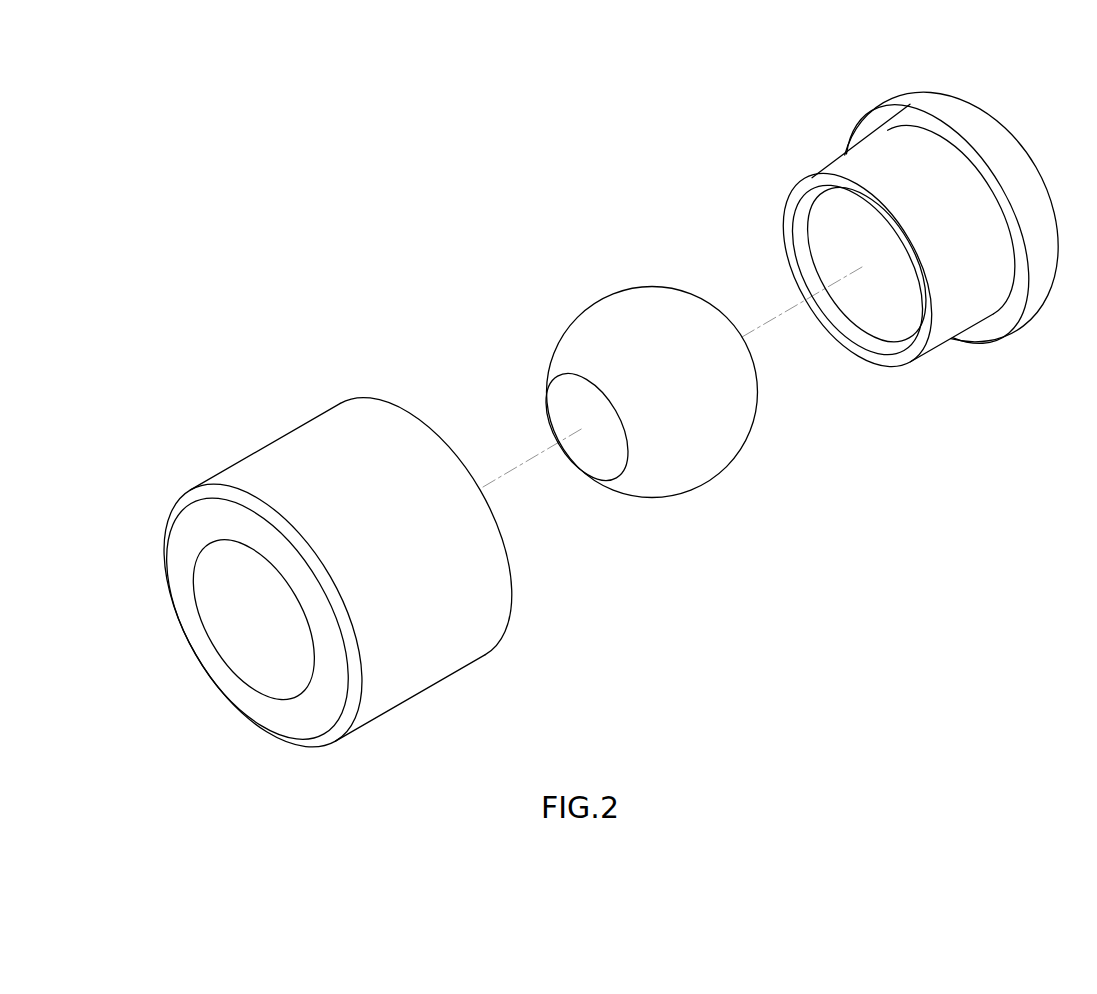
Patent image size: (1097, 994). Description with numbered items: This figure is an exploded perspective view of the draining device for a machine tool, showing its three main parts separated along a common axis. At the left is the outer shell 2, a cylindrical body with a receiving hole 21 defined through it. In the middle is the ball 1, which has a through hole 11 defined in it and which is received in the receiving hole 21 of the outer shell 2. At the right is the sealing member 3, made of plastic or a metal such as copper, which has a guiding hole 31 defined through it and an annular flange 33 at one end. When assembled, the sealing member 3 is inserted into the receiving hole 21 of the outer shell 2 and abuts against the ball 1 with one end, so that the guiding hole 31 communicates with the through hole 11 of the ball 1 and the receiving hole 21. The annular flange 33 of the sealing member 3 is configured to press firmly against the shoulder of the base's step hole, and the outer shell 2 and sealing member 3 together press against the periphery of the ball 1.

The ball 1 is at (615, 315).
The through hole 11 is at (563, 403).
The outer shell 2 is at (293, 445).
The receiving hole 21 is at (222, 598).
The sealing member 3 is at (848, 172).
The guiding hole 31 is at (828, 227).
The annular flange 33 is at (927, 100).